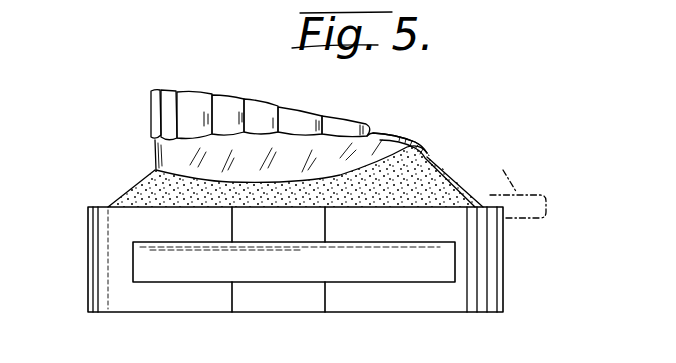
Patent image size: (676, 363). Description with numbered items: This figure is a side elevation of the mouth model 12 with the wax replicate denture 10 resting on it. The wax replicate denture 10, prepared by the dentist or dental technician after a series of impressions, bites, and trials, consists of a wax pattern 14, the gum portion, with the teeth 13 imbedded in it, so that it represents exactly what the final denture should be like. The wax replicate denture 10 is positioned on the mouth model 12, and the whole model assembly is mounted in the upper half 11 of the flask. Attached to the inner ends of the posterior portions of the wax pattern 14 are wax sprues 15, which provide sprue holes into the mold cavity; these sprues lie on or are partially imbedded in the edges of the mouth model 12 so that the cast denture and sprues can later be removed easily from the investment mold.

The wax replicate denture 10 is at (148, 119).
The upper half of the flask 11 is at (177, 312).
The mouth model 12 is at (450, 168).
The teeth 13 is at (223, 107).
The wax pattern 14 is at (175, 153).
The wax sprues 15 is at (515, 181).